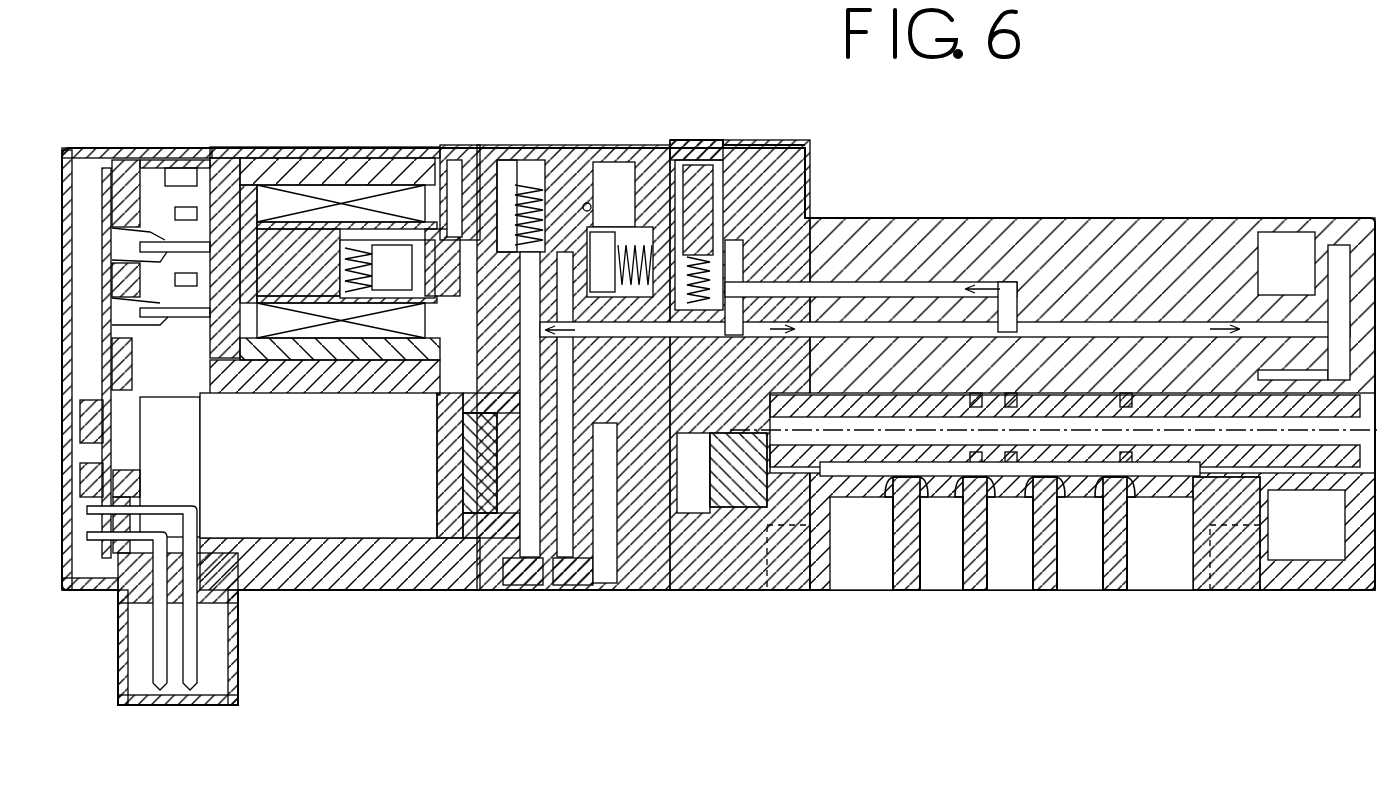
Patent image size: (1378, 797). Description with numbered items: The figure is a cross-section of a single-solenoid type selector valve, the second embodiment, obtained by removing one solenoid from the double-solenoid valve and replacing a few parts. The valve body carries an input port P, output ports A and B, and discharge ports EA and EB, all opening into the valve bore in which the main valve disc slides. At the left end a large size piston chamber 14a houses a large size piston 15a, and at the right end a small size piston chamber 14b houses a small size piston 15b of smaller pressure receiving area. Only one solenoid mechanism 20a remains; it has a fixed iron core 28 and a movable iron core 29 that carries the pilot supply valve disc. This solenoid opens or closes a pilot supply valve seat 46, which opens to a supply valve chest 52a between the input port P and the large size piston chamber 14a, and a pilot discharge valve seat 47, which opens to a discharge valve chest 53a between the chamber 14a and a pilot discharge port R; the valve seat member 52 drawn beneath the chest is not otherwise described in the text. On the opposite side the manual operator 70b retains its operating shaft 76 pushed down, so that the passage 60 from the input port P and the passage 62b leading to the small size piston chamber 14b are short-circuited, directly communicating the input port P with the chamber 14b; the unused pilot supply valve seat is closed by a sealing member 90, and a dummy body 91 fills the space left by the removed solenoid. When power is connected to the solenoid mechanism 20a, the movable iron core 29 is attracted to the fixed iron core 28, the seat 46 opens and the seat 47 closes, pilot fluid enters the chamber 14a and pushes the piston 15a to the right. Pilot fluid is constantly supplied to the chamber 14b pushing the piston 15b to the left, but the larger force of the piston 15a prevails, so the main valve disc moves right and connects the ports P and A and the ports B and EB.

The large size piston chamber 14a is at (693, 485).
The small size piston chamber 14b is at (1323, 410).
The large size piston 15a is at (745, 470).
The small size piston 15b is at (1283, 477).
The solenoid mechanism 20a is at (352, 138).
The fixed iron core 28 is at (290, 253).
The movable iron core 29 is at (440, 240).
The pilot supply valve seat 46 is at (540, 230).
The pilot discharge valve seat 47 is at (590, 200).
The valve seat member 52 is at (553, 515).
The supply valve chest 52a is at (487, 222).
The discharge valve chest 53a is at (645, 200).
The pilot supply passage 60 is at (952, 285).
The pilot output passage 62b is at (648, 188).
The manual operator 70b is at (705, 130).
The operating shaft 76 is at (722, 147).
The sealing member 90 is at (455, 500).
The dummy body 91 is at (342, 575).
The pilot discharge port R is at (796, 592).
The discharge port EA is at (873, 580).
The output port A is at (943, 577).
The input port P is at (1013, 577).
The output port B is at (1087, 577).
The discharge port EB is at (1157, 577).